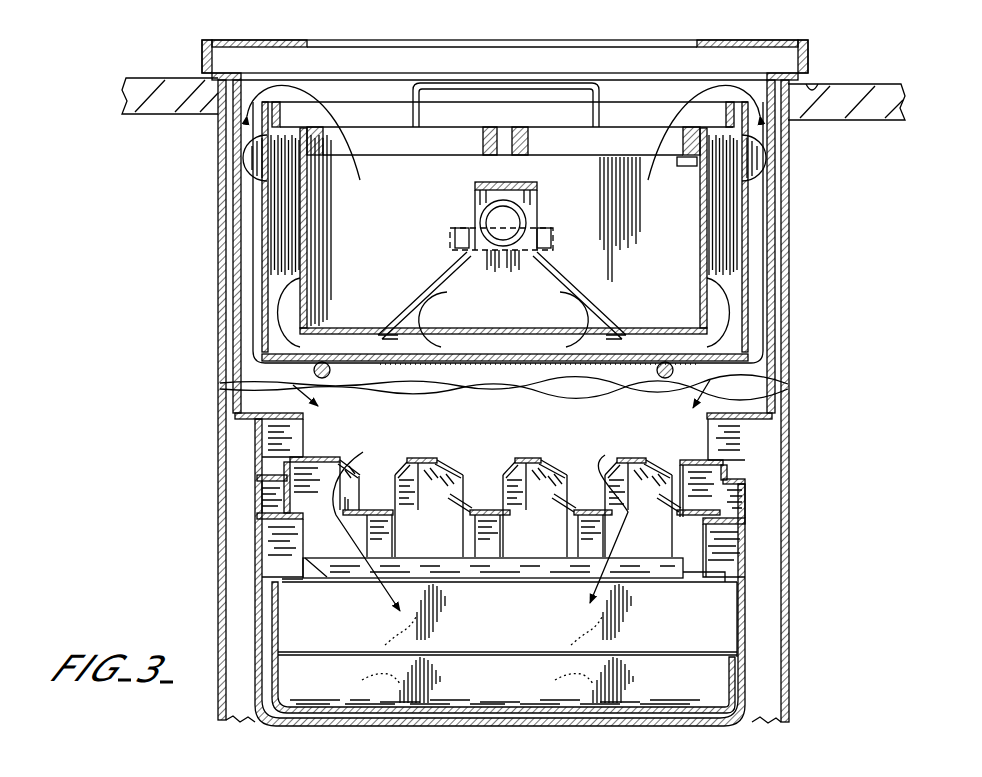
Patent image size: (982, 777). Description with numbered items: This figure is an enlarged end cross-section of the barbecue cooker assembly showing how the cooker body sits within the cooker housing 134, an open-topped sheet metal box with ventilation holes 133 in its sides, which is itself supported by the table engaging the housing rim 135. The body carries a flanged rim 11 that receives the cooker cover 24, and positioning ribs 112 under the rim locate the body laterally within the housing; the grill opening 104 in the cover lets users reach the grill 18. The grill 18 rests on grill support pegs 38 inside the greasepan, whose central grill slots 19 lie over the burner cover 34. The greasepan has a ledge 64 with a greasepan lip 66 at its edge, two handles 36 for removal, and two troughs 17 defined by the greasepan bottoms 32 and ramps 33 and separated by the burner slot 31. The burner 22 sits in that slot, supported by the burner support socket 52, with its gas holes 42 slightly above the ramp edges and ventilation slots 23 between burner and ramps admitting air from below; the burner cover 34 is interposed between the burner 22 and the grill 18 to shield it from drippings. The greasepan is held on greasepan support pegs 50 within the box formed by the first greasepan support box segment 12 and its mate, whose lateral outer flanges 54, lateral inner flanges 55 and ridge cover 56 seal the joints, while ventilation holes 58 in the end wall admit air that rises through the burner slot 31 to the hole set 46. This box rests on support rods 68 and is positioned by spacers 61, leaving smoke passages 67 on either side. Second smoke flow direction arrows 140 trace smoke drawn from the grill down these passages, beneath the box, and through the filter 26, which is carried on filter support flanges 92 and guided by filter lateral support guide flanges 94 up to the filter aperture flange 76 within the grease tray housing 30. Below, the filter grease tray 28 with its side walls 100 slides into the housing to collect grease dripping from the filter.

The flanged rim 11 is at (792, 42).
The first greasepan support box segment 12 is at (267, 278).
The troughs 17 is at (422, 258).
The grill 18 is at (377, 126).
The central grill slots 19 is at (498, 130).
The burner 22 is at (528, 208).
The ventilation slots 23 is at (450, 240).
The cooker cover 24 is at (727, 41).
The filter 26 is at (735, 492).
The filter grease tray 28 is at (735, 702).
The grease tray housing 30 is at (752, 632).
The burner slot 31 is at (478, 256).
The greasepan bottoms 32 is at (374, 352).
The ramps 33 is at (416, 283).
The burner cover 34 is at (538, 186).
The handles 36 is at (540, 83).
The grill support pegs 38 is at (338, 134).
The burner gas holes 42 is at (472, 216).
The hole set 46 is at (494, 262).
The greasepan support pegs 50 is at (264, 148).
The burner support socket 52 is at (550, 230).
The lateral outer flanges 54 is at (264, 215).
The lateral inner flanges 55 is at (300, 250).
The ridge cover 56 is at (545, 352).
The ventilation holes 58 is at (391, 340).
The spacers 61 is at (255, 178).
The greasepan ledge 64 is at (758, 138).
The greasepan lip 66 is at (205, 40).
The smoke passages 67 is at (246, 358).
The support rods 68 is at (323, 380).
The filter aperture flange 76 is at (304, 432).
The filter support flanges 92 is at (286, 530).
The filter lateral support guide flanges 94 is at (290, 466).
The side walls 100 is at (738, 668).
The grill opening 104 is at (606, 62).
The positioning ribs 112 is at (218, 102).
The ventilation holes 133 is at (224, 196).
The cooker housing 134 is at (790, 292).
The housing rim 135 is at (813, 86).
The second smoke flow direction arrows 140 is at (273, 84).